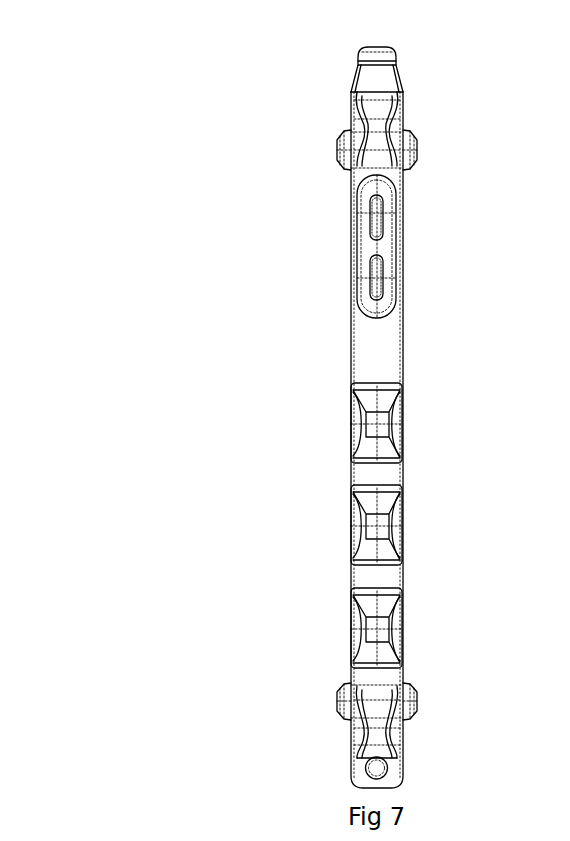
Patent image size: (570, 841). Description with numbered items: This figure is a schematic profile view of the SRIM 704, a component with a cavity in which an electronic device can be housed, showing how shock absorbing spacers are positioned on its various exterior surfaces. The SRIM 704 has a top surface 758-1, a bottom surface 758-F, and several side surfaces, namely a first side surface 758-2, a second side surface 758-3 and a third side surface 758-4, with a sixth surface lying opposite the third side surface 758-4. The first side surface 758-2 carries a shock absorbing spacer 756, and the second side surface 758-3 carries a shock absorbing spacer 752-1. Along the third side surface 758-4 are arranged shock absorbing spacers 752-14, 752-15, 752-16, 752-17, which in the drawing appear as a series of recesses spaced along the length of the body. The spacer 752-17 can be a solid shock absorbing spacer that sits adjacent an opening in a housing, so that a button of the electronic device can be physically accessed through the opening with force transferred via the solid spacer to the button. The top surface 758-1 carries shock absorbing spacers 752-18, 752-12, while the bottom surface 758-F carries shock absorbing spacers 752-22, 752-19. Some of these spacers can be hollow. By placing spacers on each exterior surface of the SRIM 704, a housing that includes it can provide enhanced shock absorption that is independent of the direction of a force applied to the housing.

The SRIM 704 is at (86, 79).
The shock absorbing spacer 752-1 is at (373, 47).
The second side surface 758-3 is at (351, 108).
The shock absorbing spacer 752-22 is at (333, 145).
The shock absorbing spacer 752-18 is at (422, 148).
The solid shock absorbing spacer 752-17 is at (366, 246).
The bottom surface 758-F is at (351, 313).
The top surface 758-1 is at (404, 340).
The third side surface 758-4 is at (381, 355).
The shock absorbing spacer 752-16 is at (372, 423).
The shock absorbing spacer 752-15 is at (372, 522).
The shock absorbing spacer 752-14 is at (372, 628).
The shock absorbing spacer 752-19 is at (330, 699).
The shock absorbing spacer 752-12 is at (422, 698).
The first side surface 758-2 is at (353, 757).
The shock absorbing spacer 756 is at (400, 785).